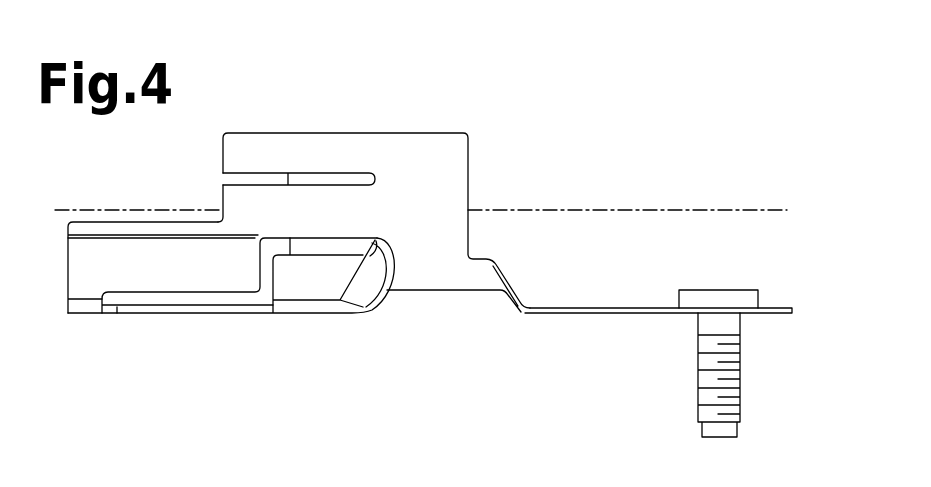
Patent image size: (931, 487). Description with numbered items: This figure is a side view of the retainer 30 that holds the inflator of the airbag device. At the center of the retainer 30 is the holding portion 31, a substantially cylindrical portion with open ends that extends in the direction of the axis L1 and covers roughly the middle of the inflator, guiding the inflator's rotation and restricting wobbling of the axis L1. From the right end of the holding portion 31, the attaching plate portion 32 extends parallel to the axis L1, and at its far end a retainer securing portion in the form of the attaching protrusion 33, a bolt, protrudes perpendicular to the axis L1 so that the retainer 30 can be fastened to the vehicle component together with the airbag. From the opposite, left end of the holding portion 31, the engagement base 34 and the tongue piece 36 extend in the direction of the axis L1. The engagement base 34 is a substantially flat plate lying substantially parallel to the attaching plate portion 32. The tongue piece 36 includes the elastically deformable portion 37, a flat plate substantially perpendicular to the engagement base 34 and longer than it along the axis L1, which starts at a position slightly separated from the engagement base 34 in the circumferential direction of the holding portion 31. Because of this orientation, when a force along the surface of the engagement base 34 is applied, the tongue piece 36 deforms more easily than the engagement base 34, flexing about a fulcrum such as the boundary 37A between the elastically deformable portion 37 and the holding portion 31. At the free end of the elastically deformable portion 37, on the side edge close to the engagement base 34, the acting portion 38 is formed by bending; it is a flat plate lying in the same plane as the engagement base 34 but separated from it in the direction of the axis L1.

The retainer 30 is at (429, 267).
The holding portion 31 is at (418, 292).
The attaching plate portion 32 is at (598, 313).
The attaching protrusion 33 is at (740, 372).
The engagement base 34 is at (182, 313).
The tongue piece 36 is at (222, 312).
The elastically deformable portion 37 is at (133, 280).
The boundary 37A is at (380, 213).
The acting portion 38 is at (82, 313).
The axis L1 is at (778, 210).